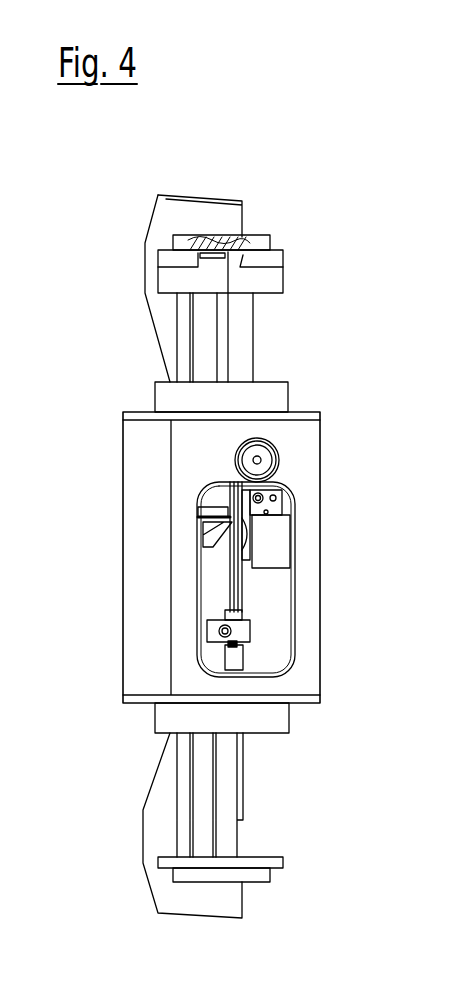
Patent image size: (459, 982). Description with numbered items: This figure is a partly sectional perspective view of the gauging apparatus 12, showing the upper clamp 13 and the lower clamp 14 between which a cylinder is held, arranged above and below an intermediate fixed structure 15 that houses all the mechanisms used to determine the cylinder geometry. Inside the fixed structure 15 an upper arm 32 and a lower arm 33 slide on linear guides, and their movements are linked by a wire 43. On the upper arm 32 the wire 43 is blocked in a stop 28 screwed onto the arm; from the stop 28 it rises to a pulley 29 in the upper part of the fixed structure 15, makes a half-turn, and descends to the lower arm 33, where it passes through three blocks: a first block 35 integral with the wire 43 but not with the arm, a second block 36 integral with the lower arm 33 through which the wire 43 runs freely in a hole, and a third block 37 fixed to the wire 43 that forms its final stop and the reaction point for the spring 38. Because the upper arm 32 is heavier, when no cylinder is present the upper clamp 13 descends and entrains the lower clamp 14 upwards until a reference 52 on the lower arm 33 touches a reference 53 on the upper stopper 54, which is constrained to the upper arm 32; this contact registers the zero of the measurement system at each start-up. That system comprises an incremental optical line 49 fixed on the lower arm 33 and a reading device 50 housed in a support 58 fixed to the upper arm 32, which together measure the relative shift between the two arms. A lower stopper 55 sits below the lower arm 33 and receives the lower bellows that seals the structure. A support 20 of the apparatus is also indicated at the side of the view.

The shifting device assembly 12 is at (260, 171).
The upper clamp 13 is at (165, 223).
The lower clamp 14 is at (175, 898).
The fixed structure 15 is at (297, 435).
The support 20 is at (445, 755).
The stop 28 is at (283, 503).
The pulley 29 is at (282, 467).
The upper arm 32 is at (240, 343).
The lower arm 33 is at (228, 780).
The first block 35 is at (225, 612).
The second block 36 is at (217, 632).
The third block 37 is at (233, 657).
The spring 38 is at (227, 645).
The wire 43 is at (233, 562).
The optical line 49 is at (241, 586).
The reading device 50 is at (280, 535).
The reference 52 is at (207, 508).
The reference 53 is at (215, 255).
The upper stopper 54 is at (255, 243).
The lower stopper 55 is at (247, 863).
The support 58 is at (253, 557).